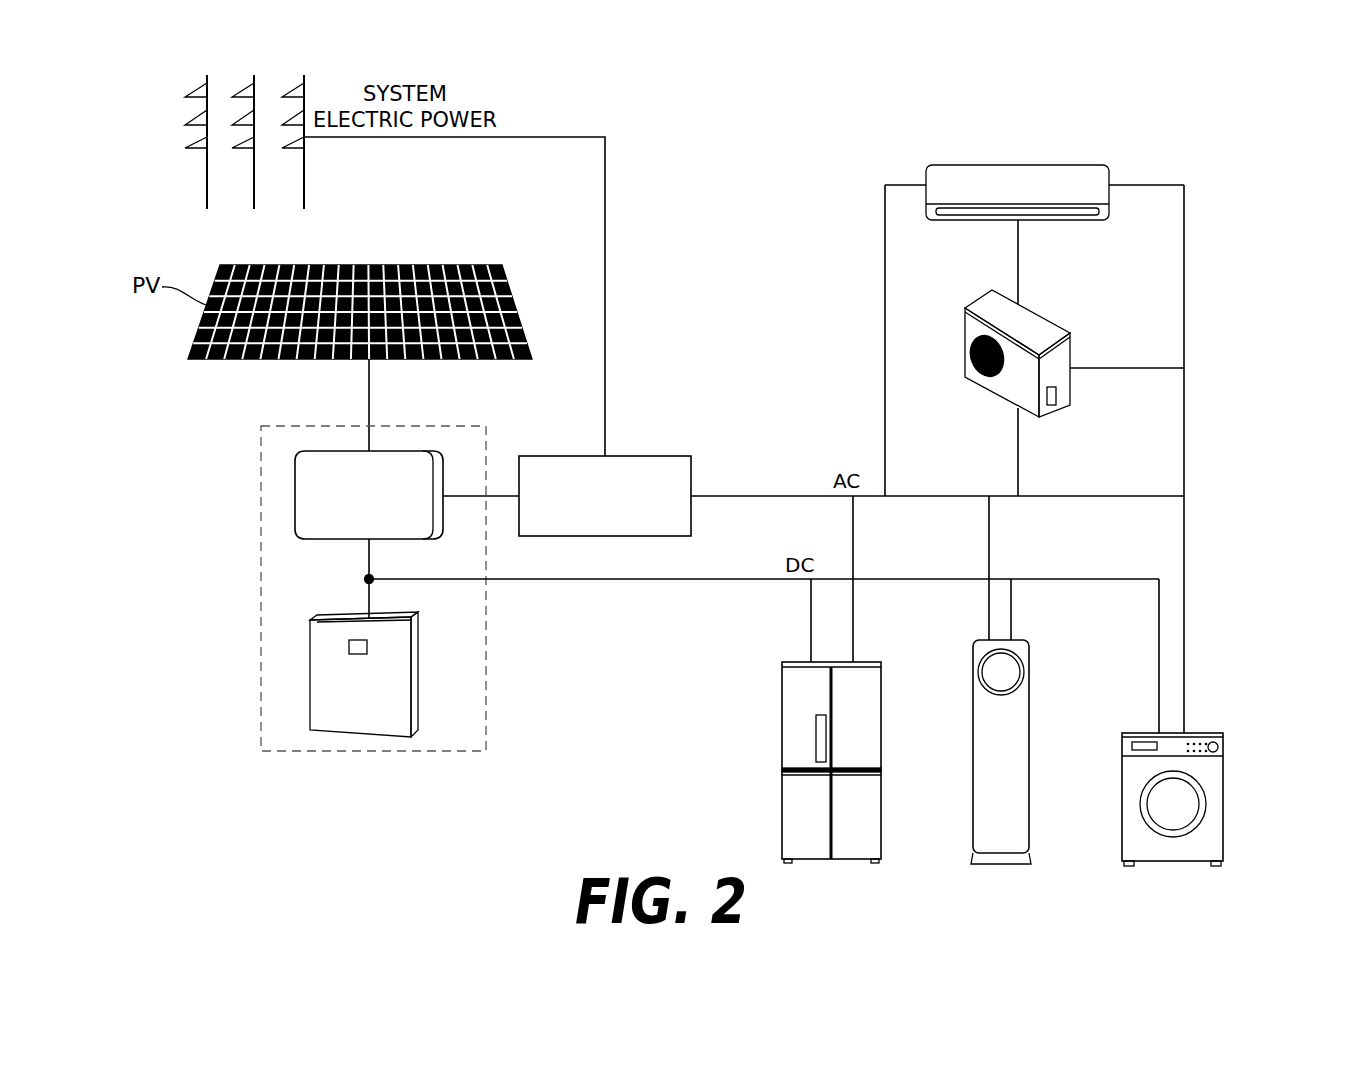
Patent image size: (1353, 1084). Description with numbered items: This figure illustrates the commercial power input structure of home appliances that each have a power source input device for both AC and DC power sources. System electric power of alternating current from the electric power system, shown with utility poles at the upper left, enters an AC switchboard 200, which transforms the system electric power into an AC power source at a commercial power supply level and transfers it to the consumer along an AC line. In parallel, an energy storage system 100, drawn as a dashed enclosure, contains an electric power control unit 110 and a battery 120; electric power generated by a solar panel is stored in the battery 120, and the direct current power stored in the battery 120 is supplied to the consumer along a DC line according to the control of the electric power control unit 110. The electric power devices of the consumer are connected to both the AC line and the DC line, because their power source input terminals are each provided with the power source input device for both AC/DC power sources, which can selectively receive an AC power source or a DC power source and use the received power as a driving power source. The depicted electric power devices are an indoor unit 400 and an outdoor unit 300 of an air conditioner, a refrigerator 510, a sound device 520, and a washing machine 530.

The energy storage system 100 is at (261, 583).
The electric power control unit 110 is at (295, 496).
The battery 120 is at (310, 673).
The AC switchboard 200 is at (672, 456).
The outdoor unit 300 is at (1045, 312).
The indoor unit 400 is at (1073, 165).
The refrigerator 510 is at (870, 660).
The sound device 520 is at (1022, 640).
The washing machine 530 is at (1207, 733).